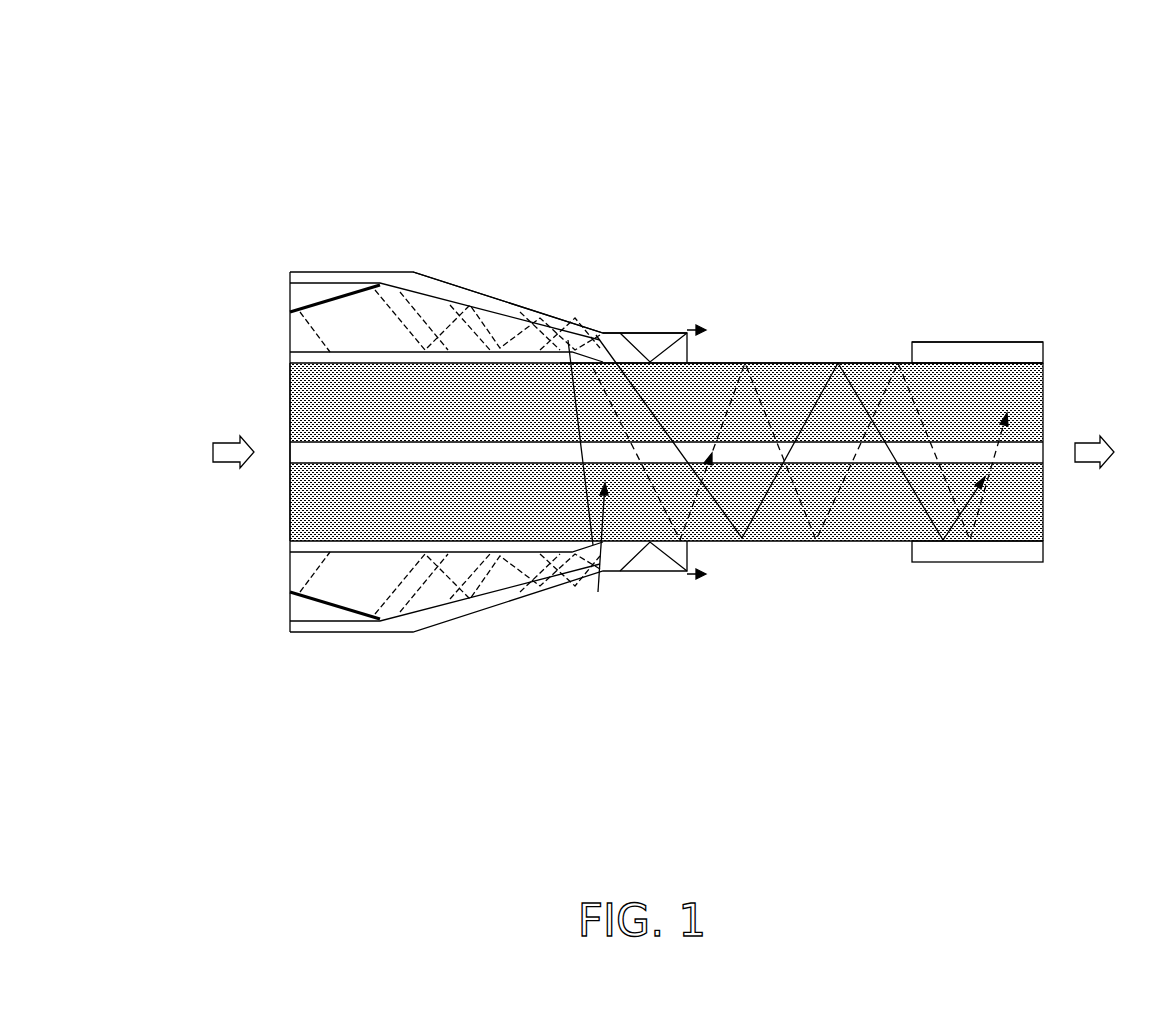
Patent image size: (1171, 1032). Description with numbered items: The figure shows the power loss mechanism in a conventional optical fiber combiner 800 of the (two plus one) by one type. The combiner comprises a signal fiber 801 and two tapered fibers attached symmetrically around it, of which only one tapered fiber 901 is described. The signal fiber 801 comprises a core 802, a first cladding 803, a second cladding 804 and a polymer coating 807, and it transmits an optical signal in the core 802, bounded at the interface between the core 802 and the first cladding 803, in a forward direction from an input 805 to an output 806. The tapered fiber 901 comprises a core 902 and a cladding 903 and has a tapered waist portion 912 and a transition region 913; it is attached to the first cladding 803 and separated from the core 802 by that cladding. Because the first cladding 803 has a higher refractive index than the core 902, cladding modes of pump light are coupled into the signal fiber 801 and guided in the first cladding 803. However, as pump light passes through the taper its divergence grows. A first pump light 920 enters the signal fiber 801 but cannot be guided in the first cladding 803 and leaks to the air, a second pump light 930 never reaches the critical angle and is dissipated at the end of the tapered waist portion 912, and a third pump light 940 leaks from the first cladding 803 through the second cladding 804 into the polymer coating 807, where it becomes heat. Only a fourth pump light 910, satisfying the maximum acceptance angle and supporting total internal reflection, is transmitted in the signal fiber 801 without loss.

The conventional optical fiber combiner 800 is at (743, 312).
The signal fiber 801 is at (855, 357).
The core 802 is at (290, 447).
The first cladding 803 is at (305, 515).
The second cladding 804 is at (985, 352).
The input 805 is at (213, 443).
The output 806 is at (1098, 468).
The polymer coating 807 is at (932, 342).
The tapered fiber 901 is at (462, 285).
The core 902 is at (340, 335).
The cladding 903 is at (390, 283).
The fourth pump light 910 is at (903, 488).
The tapered waist portion 912 is at (660, 333).
The transition region 913 is at (513, 296).
The first pump light 920 is at (598, 592).
The second pump light 930 is at (692, 333).
The third pump light 940 is at (978, 548).